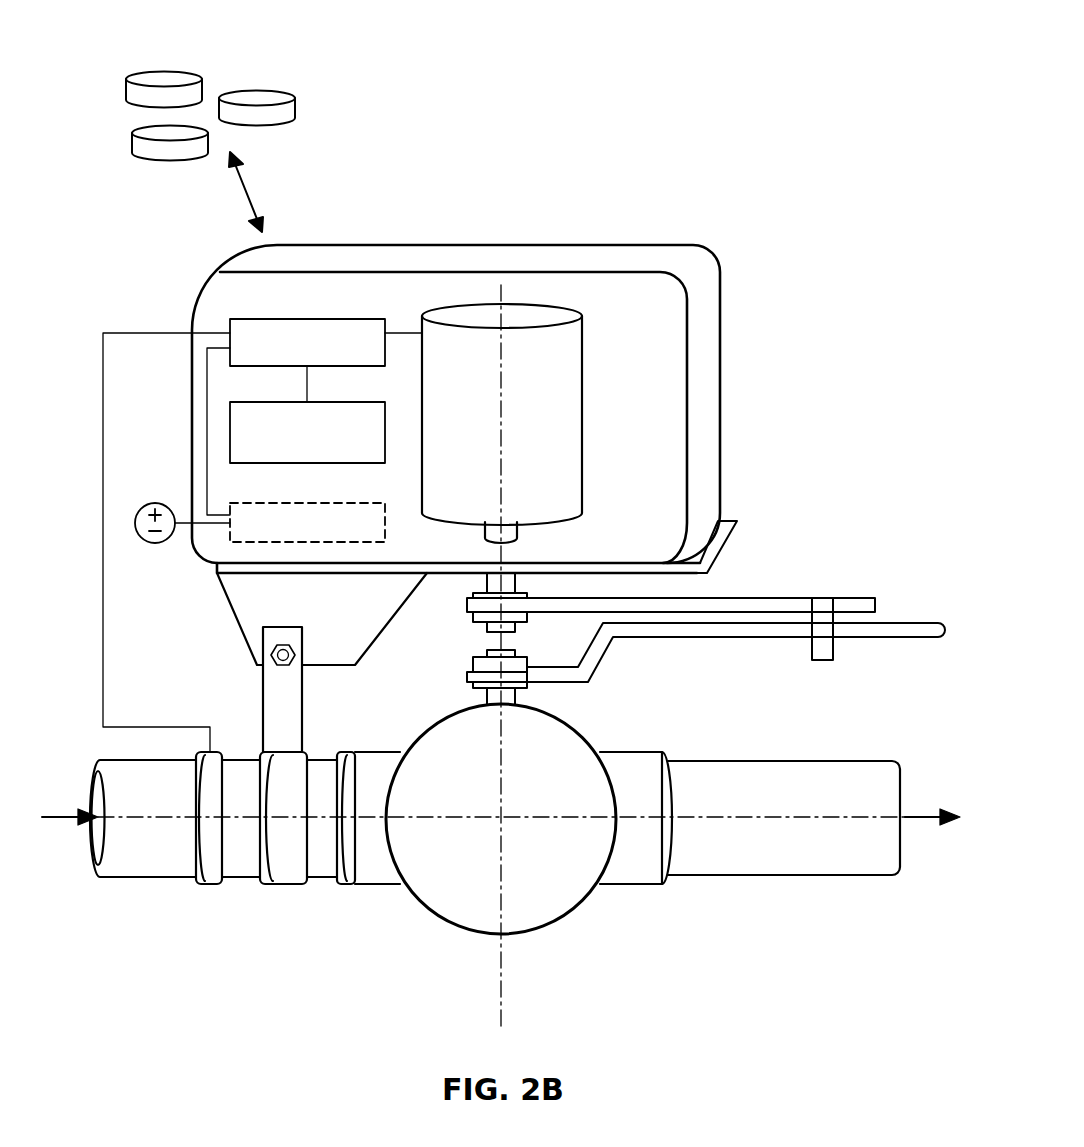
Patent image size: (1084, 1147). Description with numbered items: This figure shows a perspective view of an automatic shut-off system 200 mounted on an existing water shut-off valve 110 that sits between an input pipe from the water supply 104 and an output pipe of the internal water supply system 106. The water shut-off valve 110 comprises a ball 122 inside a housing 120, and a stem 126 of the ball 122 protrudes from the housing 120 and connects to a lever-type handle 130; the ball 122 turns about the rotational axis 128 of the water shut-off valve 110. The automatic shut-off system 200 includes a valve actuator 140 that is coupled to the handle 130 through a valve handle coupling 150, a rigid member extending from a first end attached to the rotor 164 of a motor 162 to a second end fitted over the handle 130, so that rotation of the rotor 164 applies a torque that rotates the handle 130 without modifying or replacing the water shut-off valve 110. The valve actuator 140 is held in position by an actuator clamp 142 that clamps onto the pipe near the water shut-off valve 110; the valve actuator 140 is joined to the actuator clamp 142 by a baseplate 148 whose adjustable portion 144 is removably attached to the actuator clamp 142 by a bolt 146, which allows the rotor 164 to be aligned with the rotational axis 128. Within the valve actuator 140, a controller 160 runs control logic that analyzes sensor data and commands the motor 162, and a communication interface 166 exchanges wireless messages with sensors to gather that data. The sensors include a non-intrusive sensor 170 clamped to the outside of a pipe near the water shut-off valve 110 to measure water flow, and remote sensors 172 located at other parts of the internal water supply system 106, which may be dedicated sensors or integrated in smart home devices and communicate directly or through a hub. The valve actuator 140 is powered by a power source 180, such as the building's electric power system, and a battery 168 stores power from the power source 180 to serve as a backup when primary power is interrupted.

The water supply 104 is at (143, 879).
The internal water supply system 106 is at (783, 877).
The water shut-off valve 110 is at (453, 972).
The housing 120 is at (632, 887).
The ball 122 is at (562, 742).
The stem 126 is at (515, 650).
The rotational axis 128 is at (503, 990).
The handle 130 is at (926, 622).
The valve actuator 140 is at (548, 258).
The actuator clamp 142 is at (288, 886).
The adjustable portion 144 is at (245, 600).
The bolt 146 is at (270, 655).
The baseplate 148 is at (726, 541).
The valve handle coupling 150 is at (843, 597).
The controller 160 is at (351, 319).
The motor 162 is at (585, 366).
The rotor 164 is at (517, 582).
The communication interface 166 is at (351, 402).
The battery 168 is at (351, 503).
The non-intrusive sensor 170 is at (210, 886).
The remote sensors 172 is at (254, 58).
The power source 180 is at (155, 503).
The automatic shut-off system 200 is at (671, 158).